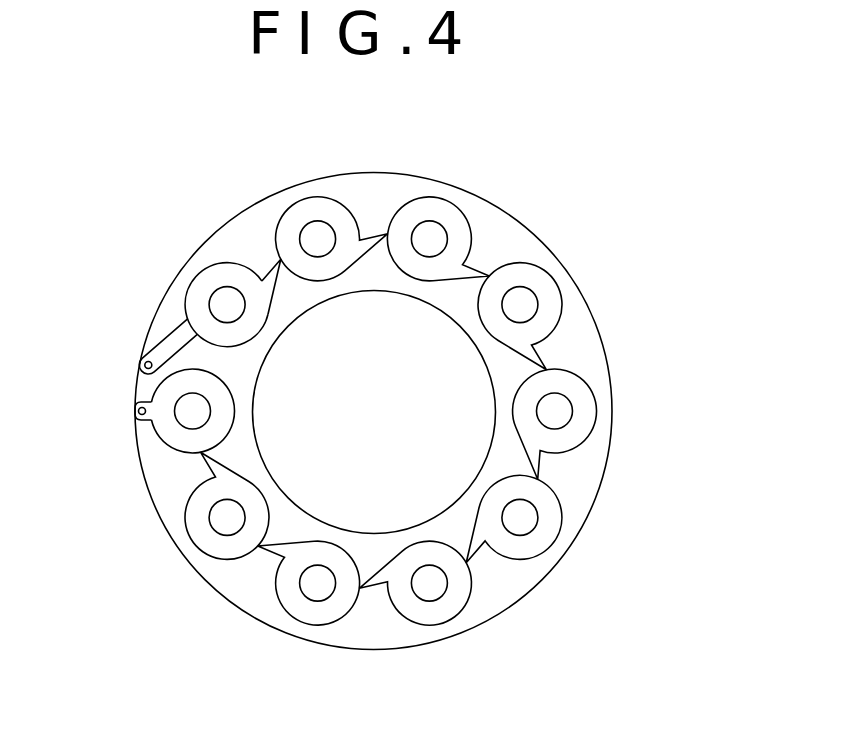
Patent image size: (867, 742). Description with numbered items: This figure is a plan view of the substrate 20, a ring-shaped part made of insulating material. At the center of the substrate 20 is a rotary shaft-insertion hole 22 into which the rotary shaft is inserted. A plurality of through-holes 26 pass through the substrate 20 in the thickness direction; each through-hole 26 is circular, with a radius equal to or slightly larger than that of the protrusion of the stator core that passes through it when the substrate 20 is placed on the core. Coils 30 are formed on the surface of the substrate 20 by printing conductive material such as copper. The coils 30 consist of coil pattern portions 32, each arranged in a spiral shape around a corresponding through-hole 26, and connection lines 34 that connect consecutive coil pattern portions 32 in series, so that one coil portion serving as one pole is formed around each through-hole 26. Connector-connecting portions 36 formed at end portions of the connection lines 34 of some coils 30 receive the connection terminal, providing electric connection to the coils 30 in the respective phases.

The substrate 20 is at (497, 235).
The rotary shaft-insertion hole 22 is at (421, 313).
The through-hole 26 is at (322, 237).
The coil 30 is at (374, 362).
The coil pattern portion 32 is at (300, 213).
The connection line 34 is at (262, 278).
The connector-connecting portion 36 is at (138, 367).